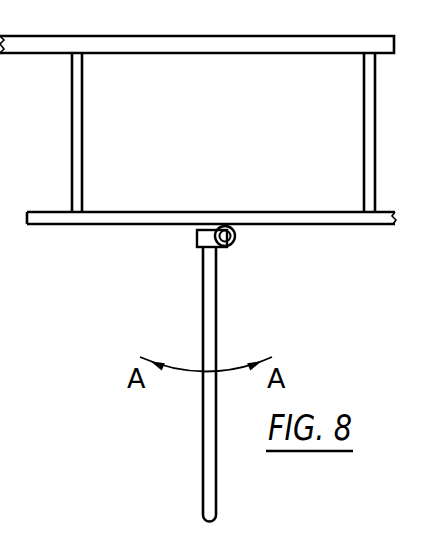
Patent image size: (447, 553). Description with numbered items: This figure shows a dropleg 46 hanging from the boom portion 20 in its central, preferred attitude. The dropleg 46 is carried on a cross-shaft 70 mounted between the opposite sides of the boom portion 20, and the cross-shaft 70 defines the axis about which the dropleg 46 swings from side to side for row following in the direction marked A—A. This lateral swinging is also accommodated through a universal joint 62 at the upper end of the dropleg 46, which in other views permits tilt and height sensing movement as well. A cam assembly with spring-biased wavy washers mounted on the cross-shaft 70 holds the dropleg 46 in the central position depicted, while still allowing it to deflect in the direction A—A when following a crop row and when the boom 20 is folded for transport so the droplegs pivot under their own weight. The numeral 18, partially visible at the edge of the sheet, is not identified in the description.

The boom portion 20 is at (258, 92).
The lower shelf plate 18 is at (198, 237).
The universal joint 62 is at (262, 272).
The cross-shaft 70 is at (236, 234).
The dropleg 46 is at (262, 314).